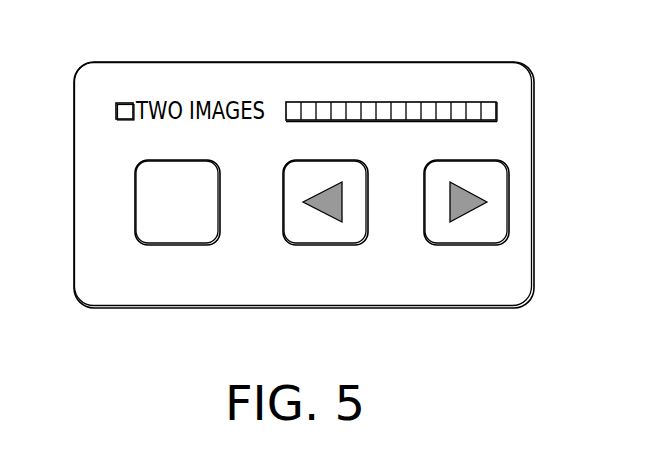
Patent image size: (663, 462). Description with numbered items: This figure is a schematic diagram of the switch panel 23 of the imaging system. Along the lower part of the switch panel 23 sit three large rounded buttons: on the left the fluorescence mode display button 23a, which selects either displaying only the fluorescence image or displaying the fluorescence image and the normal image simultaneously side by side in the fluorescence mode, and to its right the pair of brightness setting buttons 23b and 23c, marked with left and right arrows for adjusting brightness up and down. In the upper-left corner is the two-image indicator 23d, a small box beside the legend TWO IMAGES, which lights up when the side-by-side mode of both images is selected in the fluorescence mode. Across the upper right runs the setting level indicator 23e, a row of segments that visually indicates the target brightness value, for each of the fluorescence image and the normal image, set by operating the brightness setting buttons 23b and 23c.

The switch panel 23 is at (258, 288).
The fluorescence mode display button 23a is at (177, 233).
The brightness setting button 23b is at (325, 232).
The brightness setting button 23c is at (466, 232).
The two-image indicator 23d is at (123, 103).
The setting level indicator 23e is at (382, 103).